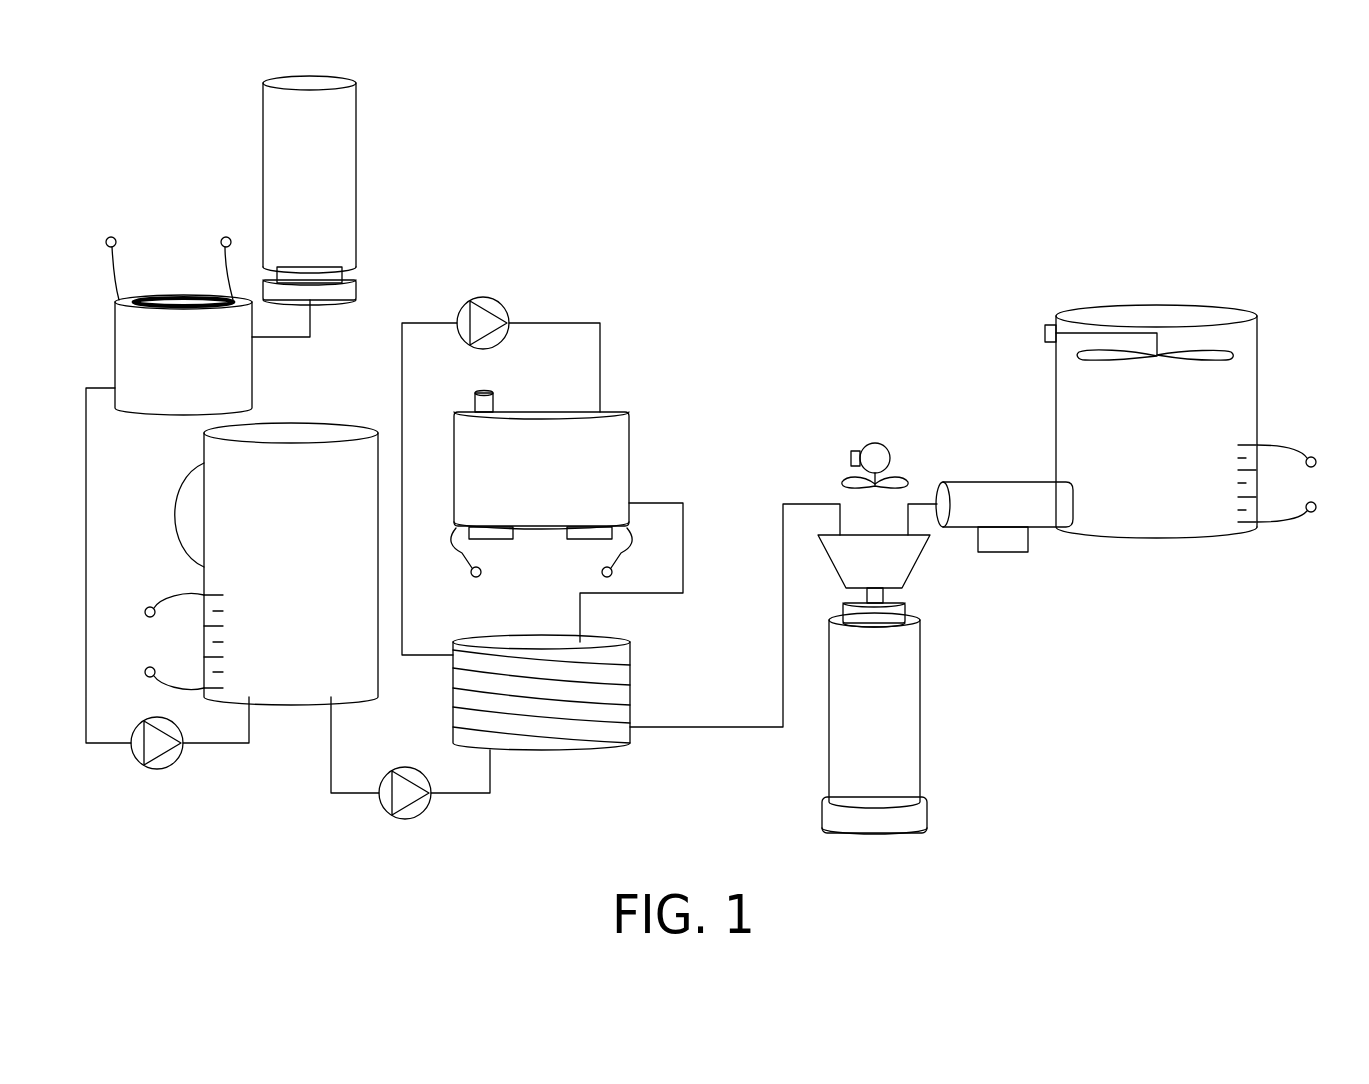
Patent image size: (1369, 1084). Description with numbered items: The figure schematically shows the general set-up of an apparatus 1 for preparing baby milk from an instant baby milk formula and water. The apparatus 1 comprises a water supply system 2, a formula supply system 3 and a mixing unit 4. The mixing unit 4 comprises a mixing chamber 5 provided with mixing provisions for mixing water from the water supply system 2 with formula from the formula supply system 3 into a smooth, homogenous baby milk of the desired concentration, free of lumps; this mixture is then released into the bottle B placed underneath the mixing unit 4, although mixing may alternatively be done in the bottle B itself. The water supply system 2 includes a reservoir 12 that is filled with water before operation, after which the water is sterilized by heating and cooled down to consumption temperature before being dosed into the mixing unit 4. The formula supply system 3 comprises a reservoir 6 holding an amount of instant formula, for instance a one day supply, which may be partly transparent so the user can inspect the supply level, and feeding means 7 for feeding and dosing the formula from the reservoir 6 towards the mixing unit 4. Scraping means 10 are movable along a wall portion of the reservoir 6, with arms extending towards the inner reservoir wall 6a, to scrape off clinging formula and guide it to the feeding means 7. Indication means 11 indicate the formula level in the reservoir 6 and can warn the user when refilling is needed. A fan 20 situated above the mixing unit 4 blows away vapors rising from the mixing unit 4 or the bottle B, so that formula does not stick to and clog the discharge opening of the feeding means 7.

The apparatus 1 is at (125, 152).
The water supply system 2 is at (542, 278).
The formula supply system 3 is at (1155, 290).
The mixing unit 4 is at (920, 526).
The mixing chamber 5 is at (882, 573).
The reservoir 6 is at (1163, 483).
The inner reservoir wall 6a is at (1256, 390).
The feeding means 7 is at (1008, 517).
The scraping means 10 is at (1078, 355).
The indication means 11 is at (1346, 495).
The reservoir 12 is at (304, 582).
The fan 20 is at (875, 443).
The bottle B is at (884, 728).